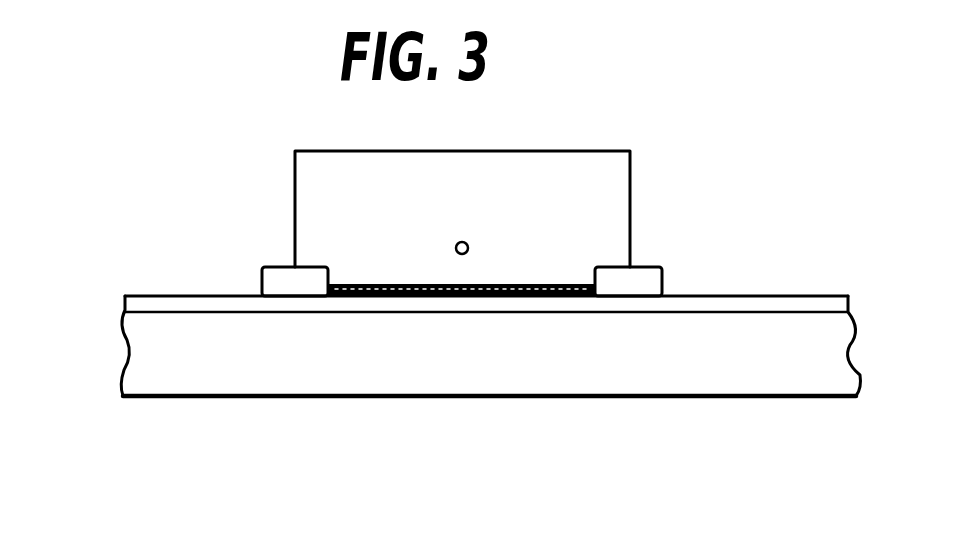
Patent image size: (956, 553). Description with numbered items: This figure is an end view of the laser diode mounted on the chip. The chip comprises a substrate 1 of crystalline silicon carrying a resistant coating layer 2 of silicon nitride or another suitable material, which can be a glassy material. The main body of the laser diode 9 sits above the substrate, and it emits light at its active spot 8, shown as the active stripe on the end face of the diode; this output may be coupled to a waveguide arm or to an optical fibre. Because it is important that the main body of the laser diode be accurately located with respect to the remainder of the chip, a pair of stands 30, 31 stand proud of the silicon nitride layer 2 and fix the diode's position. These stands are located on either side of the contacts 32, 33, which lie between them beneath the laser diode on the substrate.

The substrate 1 is at (247, 380).
The resistant coating layer 2 is at (162, 302).
The active spot 8 is at (462, 242).
The electronic component 9 is at (385, 172).
The stand 30 is at (282, 272).
The stand 31 is at (640, 273).
The contact 32 is at (377, 296).
The contact 33 is at (537, 294).